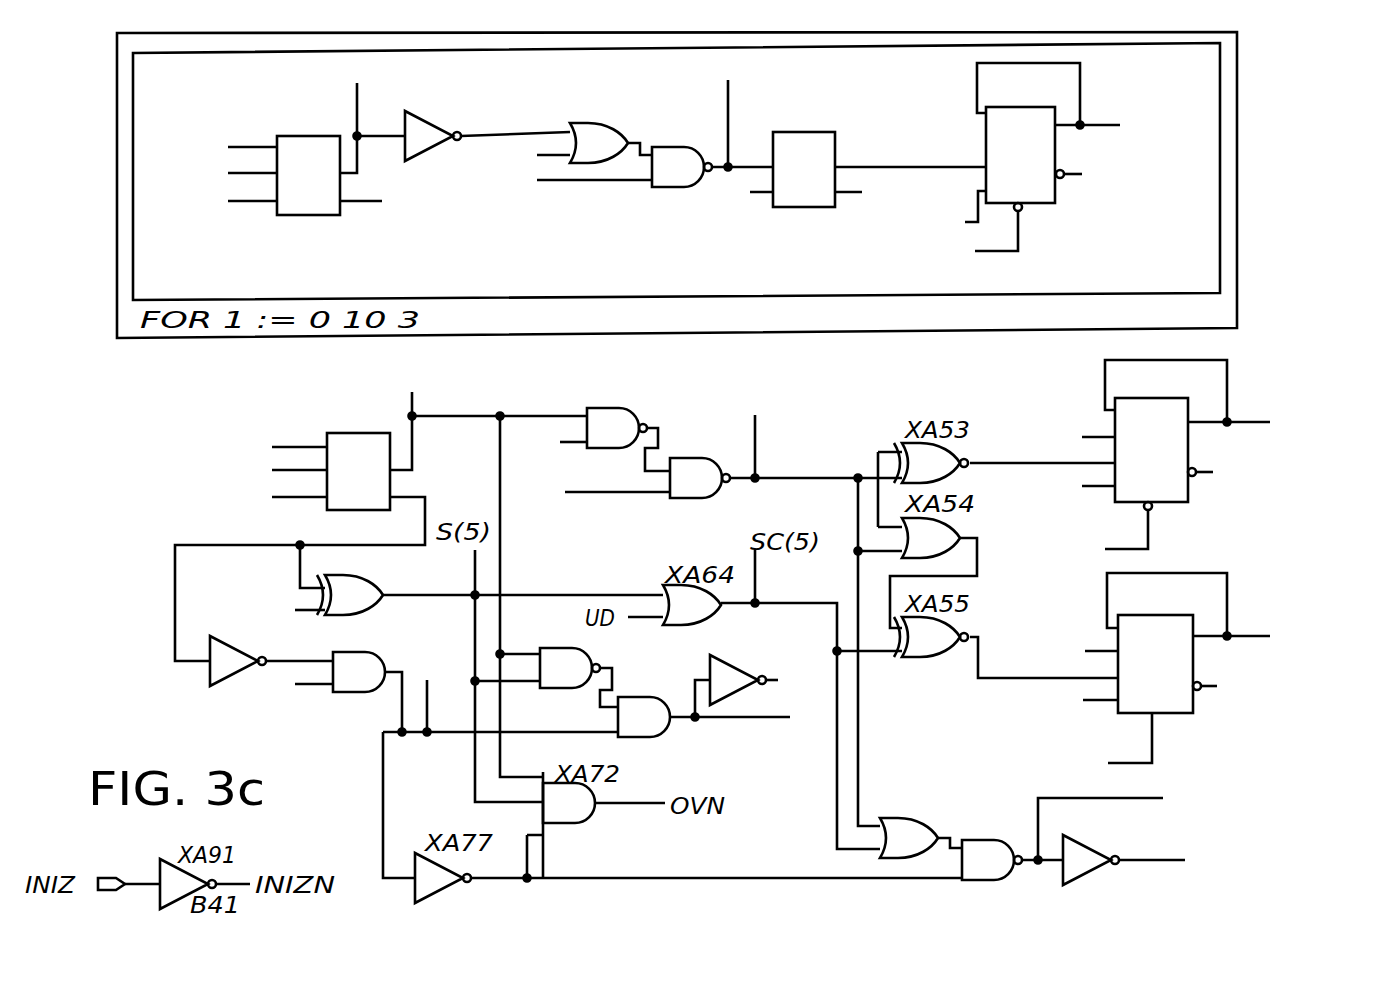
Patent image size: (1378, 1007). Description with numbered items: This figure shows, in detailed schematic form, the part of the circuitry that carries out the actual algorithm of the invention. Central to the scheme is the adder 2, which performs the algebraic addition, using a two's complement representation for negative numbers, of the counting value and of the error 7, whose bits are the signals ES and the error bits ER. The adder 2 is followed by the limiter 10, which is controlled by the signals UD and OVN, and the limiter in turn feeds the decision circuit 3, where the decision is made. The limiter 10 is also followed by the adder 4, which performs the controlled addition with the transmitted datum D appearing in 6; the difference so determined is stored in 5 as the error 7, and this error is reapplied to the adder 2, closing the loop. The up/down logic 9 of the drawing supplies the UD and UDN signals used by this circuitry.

The adder 2 is at (391, 467).
The limiter 10 is at (690, 279).
The adder 4 is at (868, 187).
The error storage 5 is at (1080, 419).
The error 7 is at (1232, 380).
The up/down logic (XA71/XA67/XA61) 9 is at (689, 698).
The decision circuit 3 is at (1072, 850).
The transmitted value 6 is at (1154, 862).